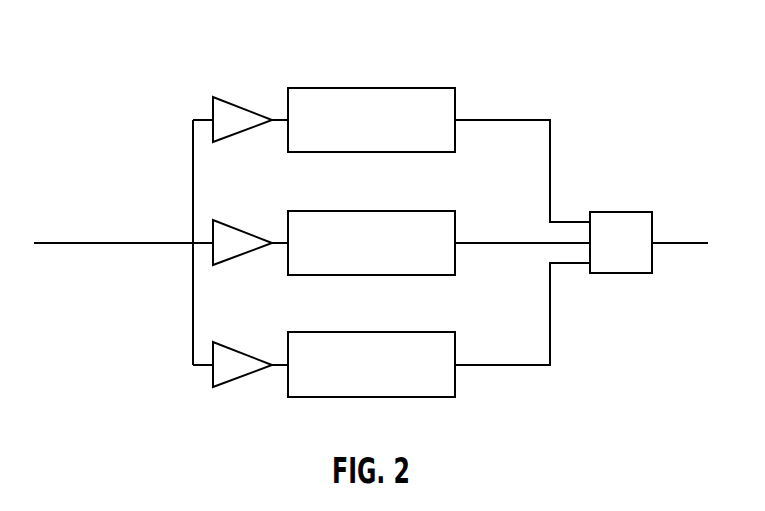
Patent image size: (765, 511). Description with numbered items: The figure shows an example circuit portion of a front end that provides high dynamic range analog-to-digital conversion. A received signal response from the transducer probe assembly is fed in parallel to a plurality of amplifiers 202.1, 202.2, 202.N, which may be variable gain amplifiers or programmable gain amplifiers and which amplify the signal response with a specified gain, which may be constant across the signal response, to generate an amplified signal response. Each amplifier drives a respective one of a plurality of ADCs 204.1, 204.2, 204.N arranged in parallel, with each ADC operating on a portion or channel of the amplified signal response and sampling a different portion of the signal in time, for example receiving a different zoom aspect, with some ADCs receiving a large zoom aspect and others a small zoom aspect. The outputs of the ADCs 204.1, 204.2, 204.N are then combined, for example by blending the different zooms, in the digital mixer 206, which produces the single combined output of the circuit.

The amplifier 202.1 is at (244, 106).
The amplifier 202.2 is at (244, 229).
The amplifier 202.N is at (244, 351).
The ADC 204.1 is at (372, 88).
The ADC 204.2 is at (372, 211).
The ADC 204.N is at (372, 332).
The digital mixer 206 is at (620, 212).